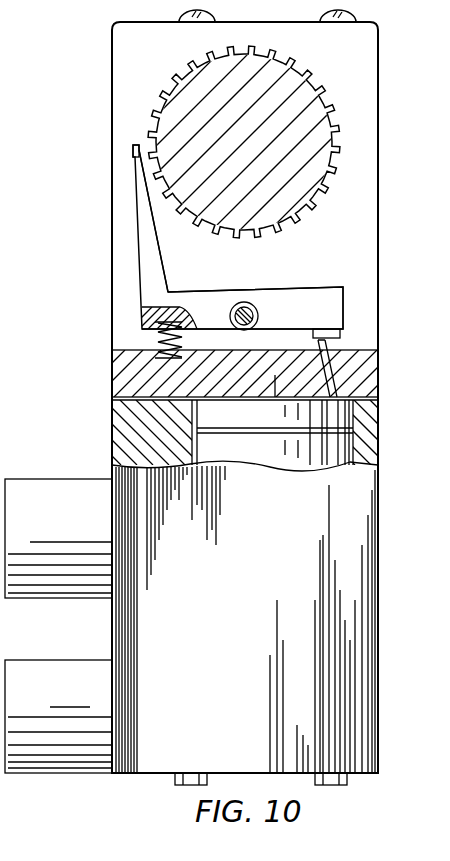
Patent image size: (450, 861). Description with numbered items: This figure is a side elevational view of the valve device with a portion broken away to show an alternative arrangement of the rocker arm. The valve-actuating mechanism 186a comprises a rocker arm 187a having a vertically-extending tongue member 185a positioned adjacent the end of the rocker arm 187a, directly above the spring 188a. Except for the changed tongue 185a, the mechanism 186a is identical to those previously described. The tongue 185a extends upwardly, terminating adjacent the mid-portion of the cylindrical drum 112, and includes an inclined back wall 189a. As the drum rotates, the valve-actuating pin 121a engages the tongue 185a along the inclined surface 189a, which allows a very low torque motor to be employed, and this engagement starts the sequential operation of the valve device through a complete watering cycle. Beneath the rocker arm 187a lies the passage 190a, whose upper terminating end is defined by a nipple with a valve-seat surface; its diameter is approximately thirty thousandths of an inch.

The cylindrical drum 112 is at (186, 66).
The valve-actuating pin 121a is at (133, 152).
The tongue member 185a is at (145, 235).
The valve-actuating mechanism 186a is at (236, 287).
The rocker arm 187a is at (328, 298).
The spring 188a is at (155, 345).
The inclined back wall 189a is at (160, 255).
The passage 190a is at (333, 342).